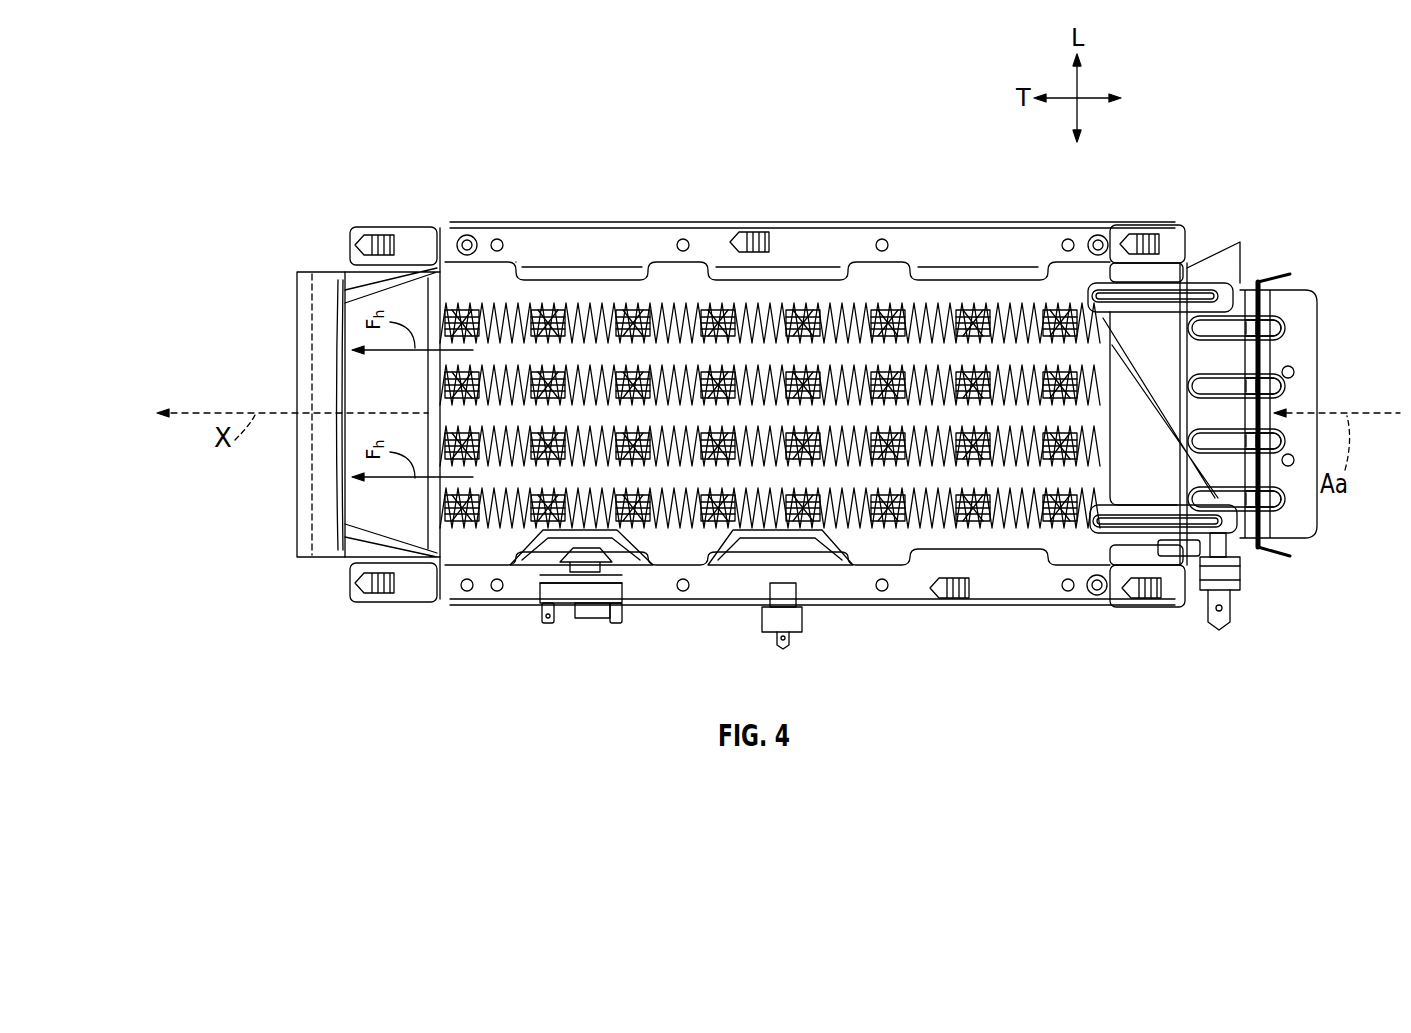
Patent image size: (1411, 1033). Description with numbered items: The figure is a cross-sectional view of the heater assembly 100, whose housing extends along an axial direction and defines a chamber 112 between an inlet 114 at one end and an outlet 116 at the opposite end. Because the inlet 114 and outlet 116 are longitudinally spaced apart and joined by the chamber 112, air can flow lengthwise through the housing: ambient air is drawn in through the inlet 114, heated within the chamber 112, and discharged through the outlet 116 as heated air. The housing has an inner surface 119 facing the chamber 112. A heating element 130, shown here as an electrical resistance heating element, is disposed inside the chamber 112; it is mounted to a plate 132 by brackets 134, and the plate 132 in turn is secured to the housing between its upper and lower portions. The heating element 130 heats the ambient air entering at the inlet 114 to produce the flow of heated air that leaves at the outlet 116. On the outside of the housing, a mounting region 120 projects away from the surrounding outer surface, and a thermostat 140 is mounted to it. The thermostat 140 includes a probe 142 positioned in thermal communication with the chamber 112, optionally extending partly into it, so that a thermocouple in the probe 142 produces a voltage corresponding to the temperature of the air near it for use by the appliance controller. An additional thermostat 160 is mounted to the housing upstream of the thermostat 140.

The heater assembly 100 is at (700, 120).
The chamber 112 is at (814, 299).
The inlet 114 is at (1277, 358).
The outlet 116 is at (297, 310).
The inner surface 119 is at (354, 384).
The mounting region 120 is at (530, 600).
The heating element 130 is at (1060, 522).
The plate 132 is at (1085, 262).
The brackets 134 is at (562, 312).
The thermostat 140 is at (593, 606).
The probe 142 is at (628, 578).
The additional thermostat 160 is at (800, 617).